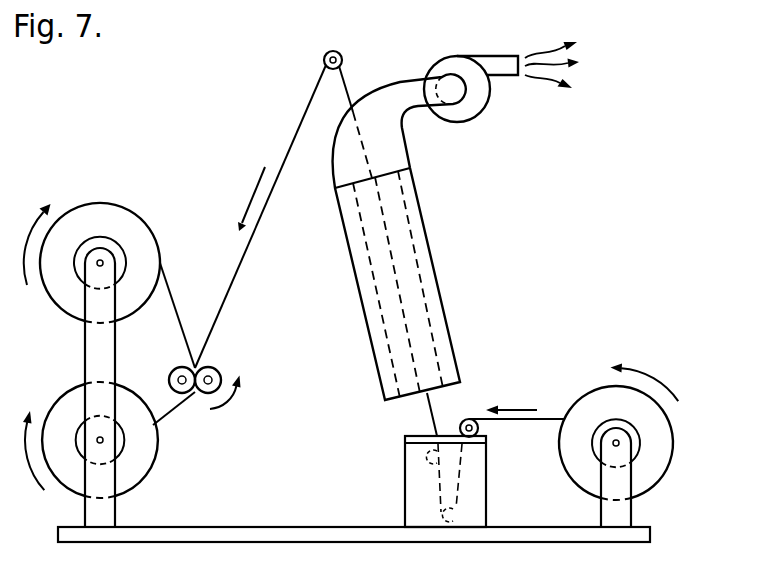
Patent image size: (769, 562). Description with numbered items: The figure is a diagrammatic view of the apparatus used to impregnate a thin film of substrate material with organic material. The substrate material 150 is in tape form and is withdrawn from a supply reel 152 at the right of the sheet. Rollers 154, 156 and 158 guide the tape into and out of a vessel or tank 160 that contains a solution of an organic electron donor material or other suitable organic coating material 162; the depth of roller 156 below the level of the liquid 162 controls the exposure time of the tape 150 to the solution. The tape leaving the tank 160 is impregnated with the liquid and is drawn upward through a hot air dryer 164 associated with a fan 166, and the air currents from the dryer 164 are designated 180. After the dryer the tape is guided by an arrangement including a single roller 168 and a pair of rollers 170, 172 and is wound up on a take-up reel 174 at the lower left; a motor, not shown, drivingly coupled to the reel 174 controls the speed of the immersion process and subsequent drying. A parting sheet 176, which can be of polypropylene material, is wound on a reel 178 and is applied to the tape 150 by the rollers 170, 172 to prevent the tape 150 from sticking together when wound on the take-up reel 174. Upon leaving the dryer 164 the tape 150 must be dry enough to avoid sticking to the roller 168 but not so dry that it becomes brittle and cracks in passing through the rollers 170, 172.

The substrate material 150 is at (232, 283).
The supply reel 152 is at (675, 428).
The roller 154 is at (479, 430).
The roller 156 is at (457, 500).
The roller 158 is at (430, 457).
The vessel or tank 160 is at (405, 488).
The organic coating material 162 is at (486, 468).
The hot air dryer 164 is at (431, 243).
The fan 166 is at (480, 115).
The single roller 168 is at (324, 69).
The roller 170 is at (176, 370).
The roller 172 is at (222, 366).
The take-up reel 174 is at (52, 402).
The parting sheet 176 is at (175, 298).
The reel 178 is at (97, 202).
The air currents 180 is at (563, 73).